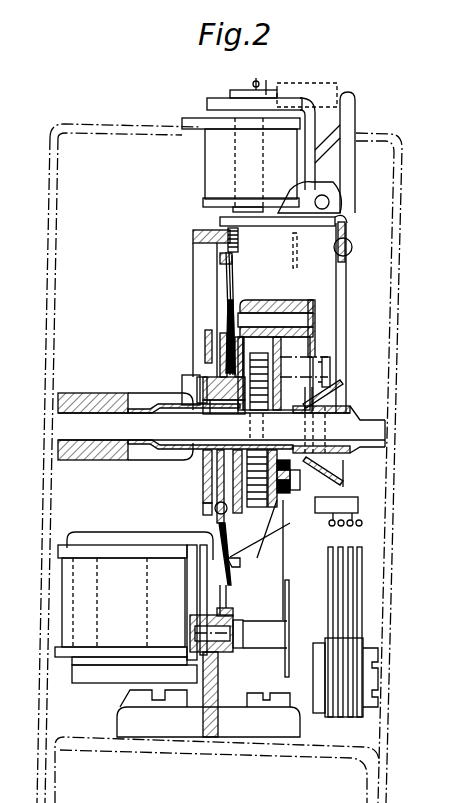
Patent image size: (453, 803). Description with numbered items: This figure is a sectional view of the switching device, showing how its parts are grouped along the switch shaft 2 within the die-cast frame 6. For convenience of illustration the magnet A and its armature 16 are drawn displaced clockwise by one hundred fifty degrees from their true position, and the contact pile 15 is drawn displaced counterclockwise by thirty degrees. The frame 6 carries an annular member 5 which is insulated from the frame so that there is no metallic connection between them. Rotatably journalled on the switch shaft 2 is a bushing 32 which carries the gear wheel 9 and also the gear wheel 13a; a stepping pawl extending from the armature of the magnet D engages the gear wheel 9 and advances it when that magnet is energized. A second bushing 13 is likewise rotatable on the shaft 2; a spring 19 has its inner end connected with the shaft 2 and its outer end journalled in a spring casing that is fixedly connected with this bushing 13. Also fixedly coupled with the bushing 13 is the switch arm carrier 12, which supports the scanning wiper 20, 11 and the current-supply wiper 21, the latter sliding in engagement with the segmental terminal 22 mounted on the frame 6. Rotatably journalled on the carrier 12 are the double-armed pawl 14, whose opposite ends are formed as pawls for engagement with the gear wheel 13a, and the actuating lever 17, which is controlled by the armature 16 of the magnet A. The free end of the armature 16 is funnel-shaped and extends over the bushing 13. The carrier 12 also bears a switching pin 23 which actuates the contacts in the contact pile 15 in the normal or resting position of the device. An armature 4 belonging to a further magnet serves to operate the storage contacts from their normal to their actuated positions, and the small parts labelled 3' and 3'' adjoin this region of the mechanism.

The magnet A is at (212, 187).
The magnet D is at (118, 591).
The switch shaft 2 is at (105, 420).
The rod 3' is at (247, 315).
The rod 3'' is at (198, 324).
The armature 4 is at (220, 260).
The annular member 5 is at (240, 241).
The die-cast frame 6 is at (193, 237).
The gear wheel 9 is at (205, 358).
The scanning wiper 11 is at (275, 545).
The switch arm carrier 12 is at (283, 348).
The bushing 13 is at (357, 413).
The gear wheel 13a is at (233, 468).
The double-armed pawl 14 is at (308, 295).
The contact pile 15 is at (343, 679).
The armature 16 is at (341, 222).
The actuating lever 17 is at (303, 406).
The spring 19 is at (280, 497).
The scanning wiper 20 is at (272, 527).
The current-supply wiper 21 is at (284, 555).
The segmental terminal 22 is at (288, 617).
The switching pin 23 is at (327, 358).
The bushing 32 is at (168, 405).